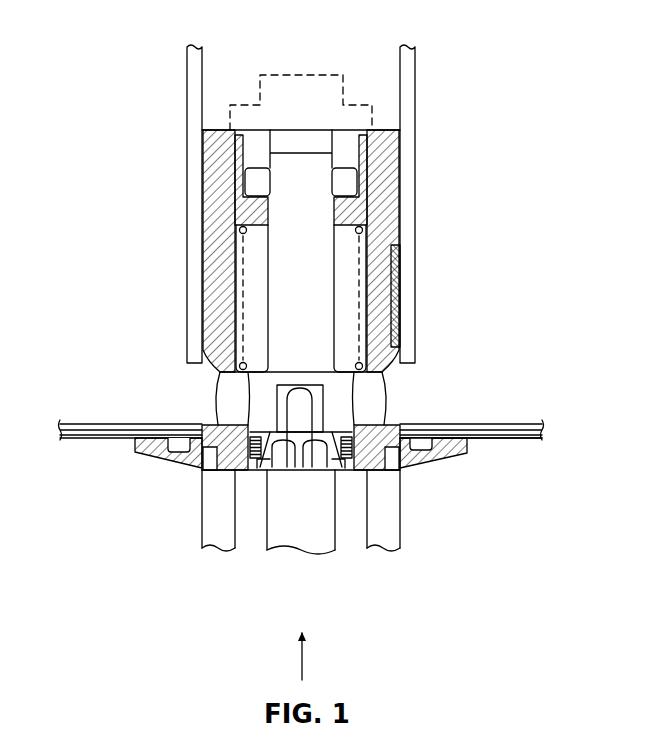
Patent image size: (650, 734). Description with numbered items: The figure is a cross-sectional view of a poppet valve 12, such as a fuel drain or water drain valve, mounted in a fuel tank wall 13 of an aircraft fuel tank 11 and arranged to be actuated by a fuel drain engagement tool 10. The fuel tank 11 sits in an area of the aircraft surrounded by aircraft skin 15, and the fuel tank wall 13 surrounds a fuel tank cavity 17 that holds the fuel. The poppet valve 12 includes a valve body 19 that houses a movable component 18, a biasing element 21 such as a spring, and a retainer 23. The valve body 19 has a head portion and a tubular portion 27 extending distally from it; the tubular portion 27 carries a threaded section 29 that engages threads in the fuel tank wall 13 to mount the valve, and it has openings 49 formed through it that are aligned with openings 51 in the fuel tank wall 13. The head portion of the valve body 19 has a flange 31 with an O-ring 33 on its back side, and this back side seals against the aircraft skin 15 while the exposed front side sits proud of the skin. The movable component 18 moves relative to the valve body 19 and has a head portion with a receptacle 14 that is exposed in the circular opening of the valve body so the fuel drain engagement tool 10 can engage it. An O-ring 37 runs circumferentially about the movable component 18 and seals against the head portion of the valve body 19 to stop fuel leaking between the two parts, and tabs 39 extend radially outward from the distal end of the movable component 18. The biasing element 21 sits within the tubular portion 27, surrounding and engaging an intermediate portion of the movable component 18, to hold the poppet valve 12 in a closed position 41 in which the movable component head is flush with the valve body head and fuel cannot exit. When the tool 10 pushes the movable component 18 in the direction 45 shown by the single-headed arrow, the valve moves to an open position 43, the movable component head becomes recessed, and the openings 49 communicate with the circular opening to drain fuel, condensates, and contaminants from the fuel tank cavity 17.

The fuel drain engagement tool 10 is at (188, 531).
The fuel tank 11 is at (462, 198).
The poppet valve 12 is at (452, 465).
The fuel tank wall 13 is at (408, 88).
The receptacle 14 is at (258, 478).
The aircraft skin 15 is at (523, 440).
The fuel tank cavity 17 is at (462, 282).
The movable component 18 is at (260, 412).
The valve body 19 is at (214, 350).
The biasing element 21 is at (243, 272).
The retainer 23 is at (212, 130).
The tubular portion 27 is at (220, 304).
The threaded section 29 is at (211, 200).
The flange 31 is at (138, 452).
The O-ring 33 is at (423, 451).
The O-ring 37 is at (247, 450).
The tabs 39 is at (258, 185).
The closed position 41 is at (346, 513).
The open position 43 is at (332, 82).
The direction 45 is at (300, 655).
The openings 49 is at (372, 413).
The openings 51 is at (386, 390).